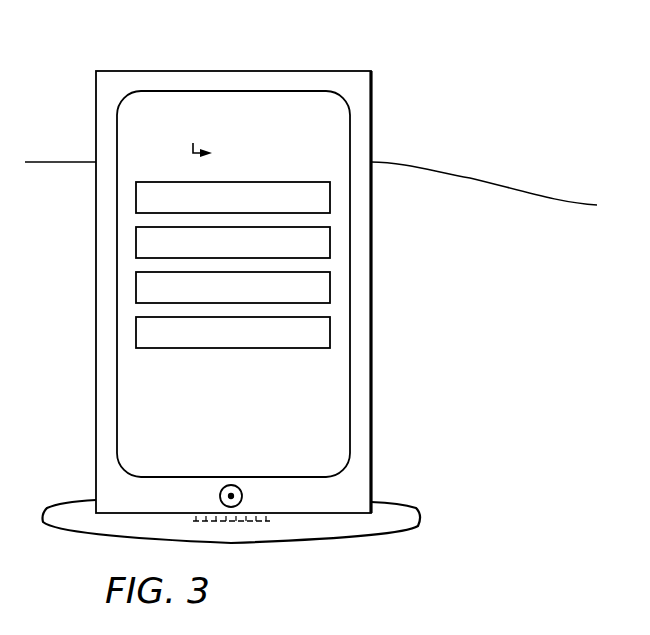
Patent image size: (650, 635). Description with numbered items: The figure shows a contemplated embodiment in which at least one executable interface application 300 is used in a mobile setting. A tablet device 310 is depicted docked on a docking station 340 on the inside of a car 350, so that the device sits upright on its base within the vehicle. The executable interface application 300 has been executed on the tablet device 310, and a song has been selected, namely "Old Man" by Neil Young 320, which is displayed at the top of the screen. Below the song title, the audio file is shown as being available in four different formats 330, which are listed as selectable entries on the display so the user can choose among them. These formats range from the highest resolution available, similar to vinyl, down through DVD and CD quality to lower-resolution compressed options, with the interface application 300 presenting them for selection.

The executable interface application 300 is at (311, 280).
The tablet device 310 is at (365, 102).
The selected song 320 is at (212, 110).
The audio file formats 330 is at (330, 193).
The docking station 340 is at (393, 512).
The car 350 is at (465, 185).